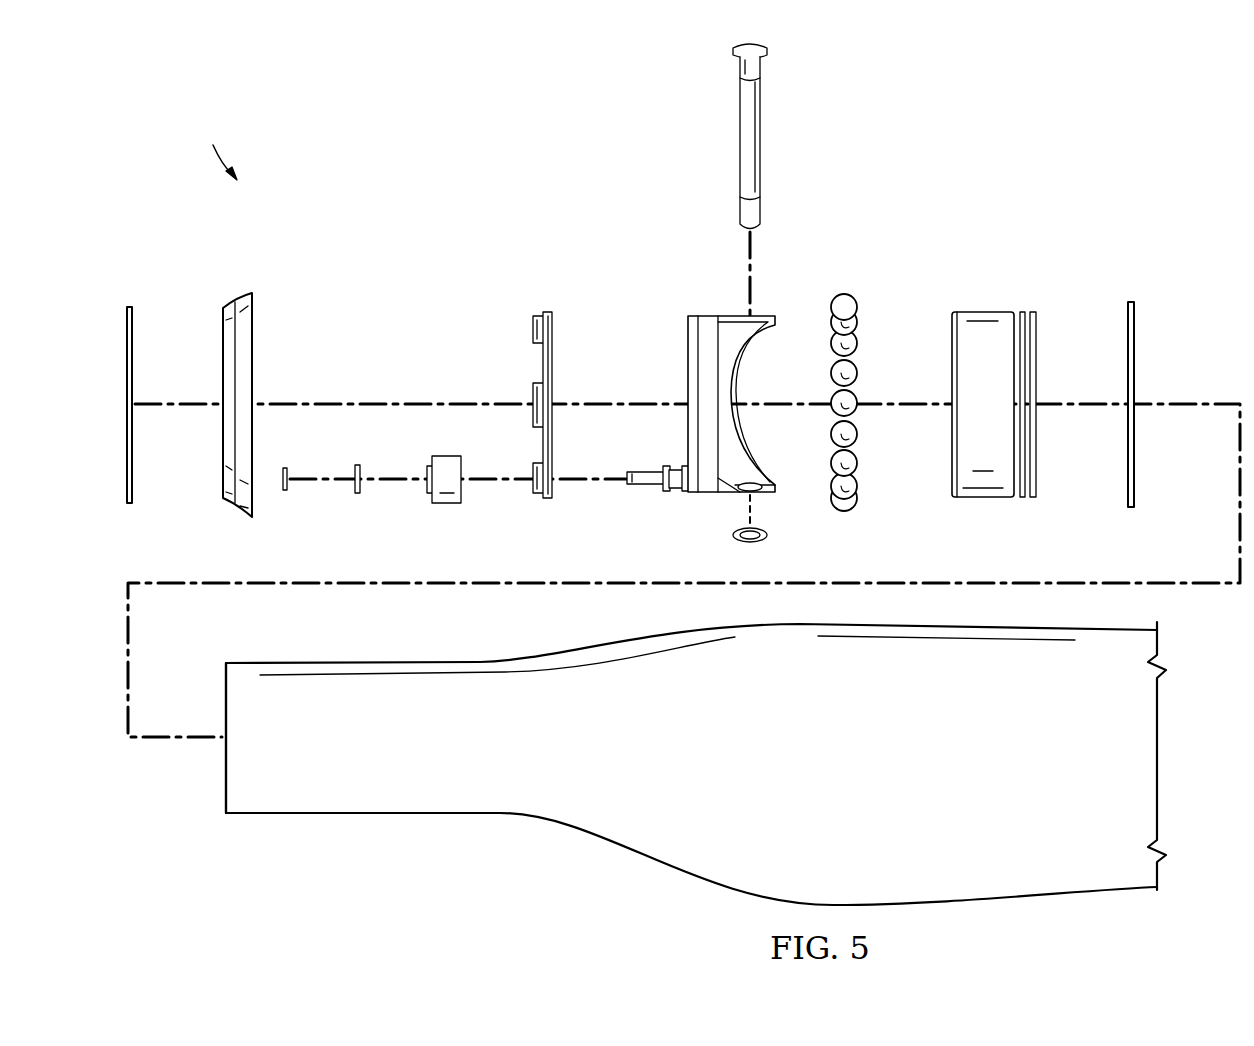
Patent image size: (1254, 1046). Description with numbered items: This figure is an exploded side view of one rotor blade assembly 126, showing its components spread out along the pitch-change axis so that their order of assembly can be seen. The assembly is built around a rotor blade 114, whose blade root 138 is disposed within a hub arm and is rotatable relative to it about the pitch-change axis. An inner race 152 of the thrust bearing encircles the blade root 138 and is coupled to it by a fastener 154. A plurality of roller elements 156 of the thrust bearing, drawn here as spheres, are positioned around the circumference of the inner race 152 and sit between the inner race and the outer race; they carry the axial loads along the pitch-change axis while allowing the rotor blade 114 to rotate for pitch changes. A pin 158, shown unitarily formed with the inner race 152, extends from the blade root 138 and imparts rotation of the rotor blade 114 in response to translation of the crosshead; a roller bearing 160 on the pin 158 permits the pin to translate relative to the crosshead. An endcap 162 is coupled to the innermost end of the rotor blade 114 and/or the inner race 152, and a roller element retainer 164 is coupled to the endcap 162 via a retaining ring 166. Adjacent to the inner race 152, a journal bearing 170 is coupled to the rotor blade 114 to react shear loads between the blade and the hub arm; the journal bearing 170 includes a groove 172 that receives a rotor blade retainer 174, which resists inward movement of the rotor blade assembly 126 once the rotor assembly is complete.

The rotor blade assembly 126 is at (215, 150).
The rotor blade 114 is at (1104, 885).
The blade root 138 is at (298, 816).
The inner race 152 is at (708, 318).
The fastener 154 is at (763, 142).
The roller elements 156 is at (850, 297).
The pin 158 is at (660, 470).
The roller bearing 160 is at (446, 504).
The endcap 162 is at (546, 311).
The roller element retainer 164 is at (246, 292).
The retaining ring 166 is at (127, 305).
The journal bearing 170 is at (975, 311).
The groove 172 is at (1031, 311).
The rotor blade retainer 174 is at (1132, 301).